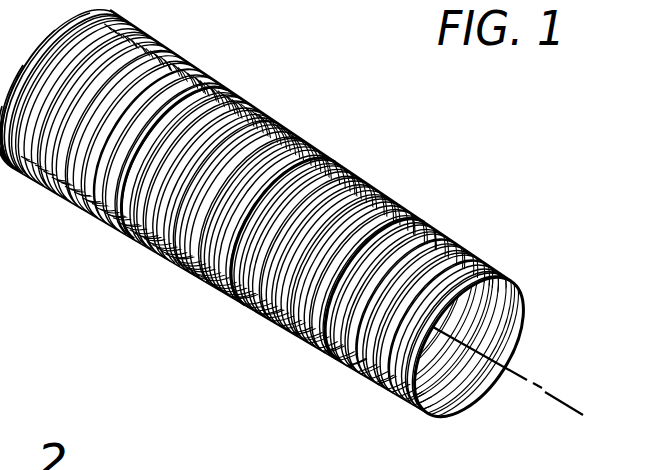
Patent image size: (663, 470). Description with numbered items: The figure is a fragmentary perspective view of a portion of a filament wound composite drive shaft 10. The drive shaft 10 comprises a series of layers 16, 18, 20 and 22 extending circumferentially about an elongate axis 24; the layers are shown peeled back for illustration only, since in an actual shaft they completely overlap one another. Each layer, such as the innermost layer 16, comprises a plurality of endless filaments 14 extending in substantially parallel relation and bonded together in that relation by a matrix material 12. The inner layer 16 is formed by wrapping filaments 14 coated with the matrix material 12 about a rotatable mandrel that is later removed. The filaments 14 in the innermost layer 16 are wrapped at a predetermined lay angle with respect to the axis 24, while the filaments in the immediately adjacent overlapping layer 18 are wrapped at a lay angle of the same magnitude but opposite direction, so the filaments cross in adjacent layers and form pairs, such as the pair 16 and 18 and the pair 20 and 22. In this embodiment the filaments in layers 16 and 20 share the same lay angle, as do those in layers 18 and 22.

The composite drive shaft 10 is at (333, 121).
The matrix material 12 is at (517, 351).
The endless filaments 14 is at (452, 247).
The innermost layer 16 is at (385, 388).
The adjacent overlapping layer 18 is at (297, 337).
The third layer 20 is at (193, 277).
The fourth layer 22 is at (50, 188).
The elongate axis 24 is at (553, 404).